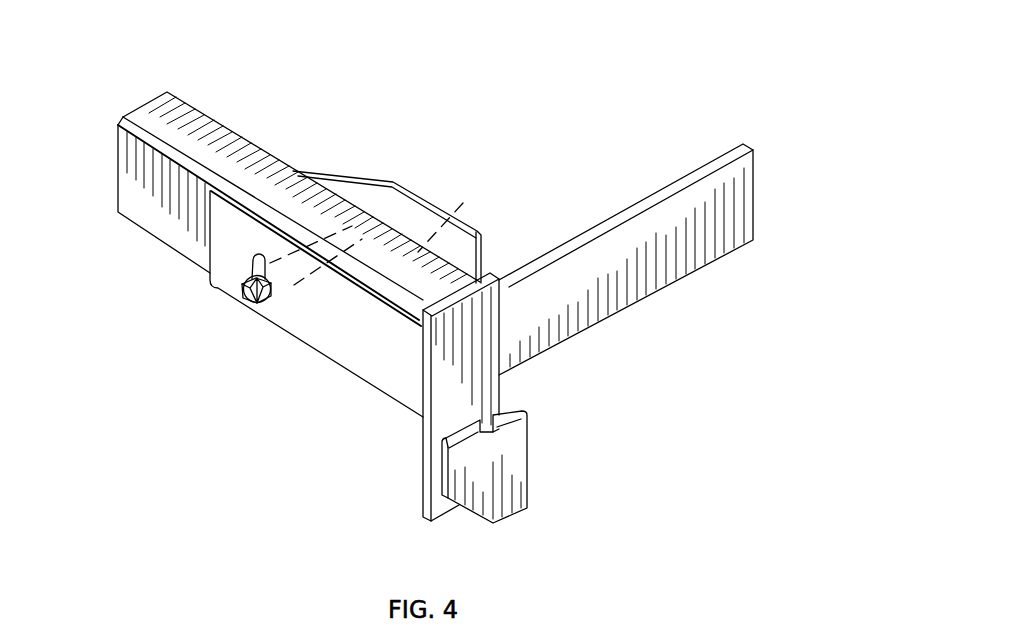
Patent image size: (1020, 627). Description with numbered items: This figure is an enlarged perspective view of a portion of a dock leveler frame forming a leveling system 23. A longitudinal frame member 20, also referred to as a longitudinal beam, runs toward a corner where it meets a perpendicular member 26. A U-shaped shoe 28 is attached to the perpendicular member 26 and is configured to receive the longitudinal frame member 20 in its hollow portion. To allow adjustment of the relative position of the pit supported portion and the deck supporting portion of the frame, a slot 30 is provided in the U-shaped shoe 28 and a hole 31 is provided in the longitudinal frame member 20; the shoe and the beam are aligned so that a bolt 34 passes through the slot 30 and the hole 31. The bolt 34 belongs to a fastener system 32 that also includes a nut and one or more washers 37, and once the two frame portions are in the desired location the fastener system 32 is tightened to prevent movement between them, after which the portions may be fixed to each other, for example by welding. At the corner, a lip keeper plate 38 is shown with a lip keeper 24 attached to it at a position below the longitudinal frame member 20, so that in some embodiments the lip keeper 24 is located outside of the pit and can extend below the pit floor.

The longitudinal frame member 20 is at (179, 121).
The leveling system 23 is at (546, 61).
The lip keeper 24 is at (518, 481).
The perpendicular member 26 is at (667, 261).
The U-shaped shoe 28 is at (348, 176).
The slot 30 is at (253, 258).
The hole 31 is at (463, 203).
The fastener system 32 is at (222, 315).
The bolt 34 is at (249, 300).
The washer 37 is at (272, 290).
The lip keeper plate 38 is at (490, 401).